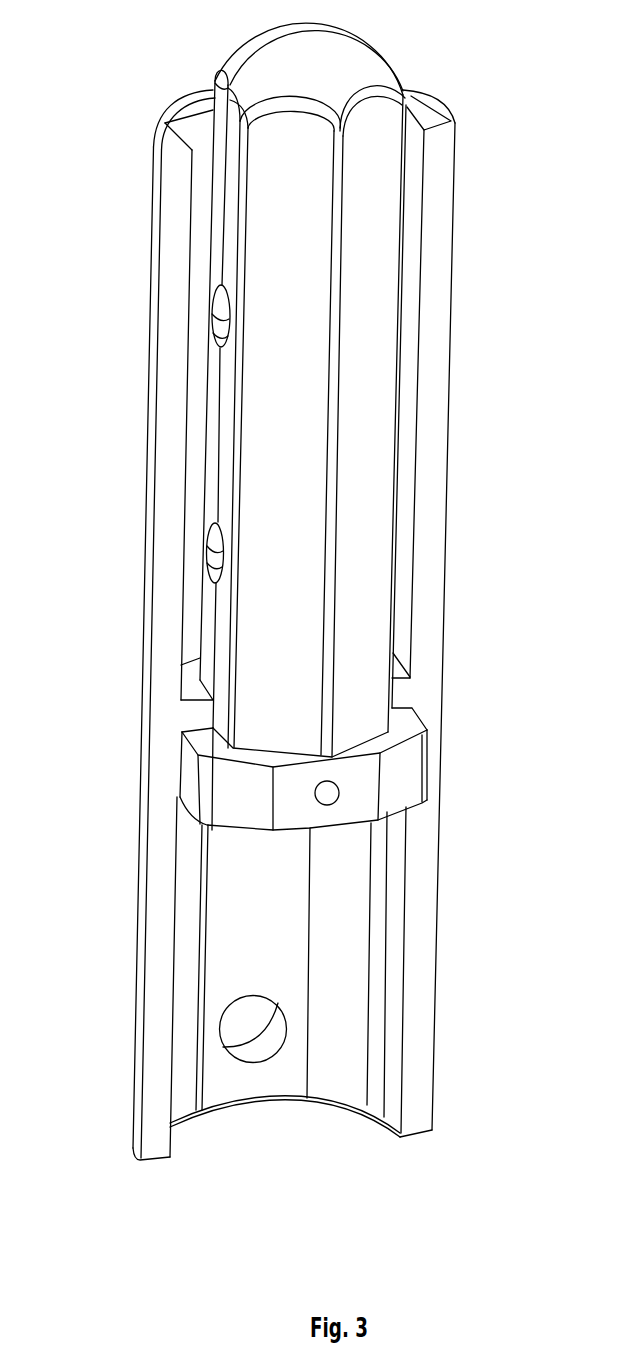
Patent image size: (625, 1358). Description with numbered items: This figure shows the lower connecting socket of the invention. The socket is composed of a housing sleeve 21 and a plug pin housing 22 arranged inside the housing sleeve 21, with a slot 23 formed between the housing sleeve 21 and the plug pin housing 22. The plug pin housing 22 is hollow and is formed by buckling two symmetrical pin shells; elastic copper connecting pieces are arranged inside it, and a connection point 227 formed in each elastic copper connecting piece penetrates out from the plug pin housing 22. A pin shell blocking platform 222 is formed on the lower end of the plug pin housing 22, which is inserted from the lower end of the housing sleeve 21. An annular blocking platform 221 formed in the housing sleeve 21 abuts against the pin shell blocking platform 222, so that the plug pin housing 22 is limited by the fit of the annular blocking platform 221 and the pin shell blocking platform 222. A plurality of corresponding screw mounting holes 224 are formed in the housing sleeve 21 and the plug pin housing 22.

The housing sleeve 21 is at (363, 625).
The plug pin housing 22 is at (275, 390).
The slot 23 is at (198, 428).
The annular blocking platform 221 is at (402, 697).
The pin shell blocking platform 222 is at (381, 842).
The screw mounting hole 224 is at (328, 802).
The connection point 227 is at (213, 315).